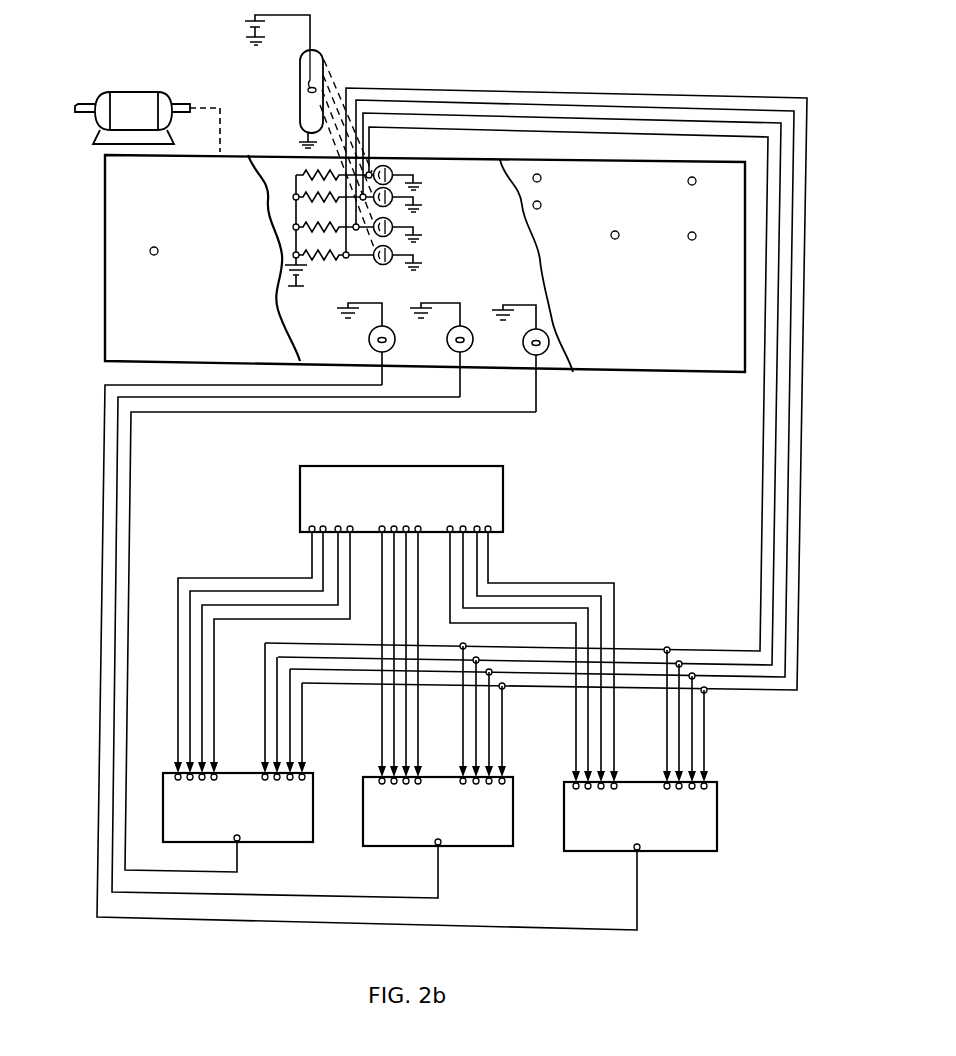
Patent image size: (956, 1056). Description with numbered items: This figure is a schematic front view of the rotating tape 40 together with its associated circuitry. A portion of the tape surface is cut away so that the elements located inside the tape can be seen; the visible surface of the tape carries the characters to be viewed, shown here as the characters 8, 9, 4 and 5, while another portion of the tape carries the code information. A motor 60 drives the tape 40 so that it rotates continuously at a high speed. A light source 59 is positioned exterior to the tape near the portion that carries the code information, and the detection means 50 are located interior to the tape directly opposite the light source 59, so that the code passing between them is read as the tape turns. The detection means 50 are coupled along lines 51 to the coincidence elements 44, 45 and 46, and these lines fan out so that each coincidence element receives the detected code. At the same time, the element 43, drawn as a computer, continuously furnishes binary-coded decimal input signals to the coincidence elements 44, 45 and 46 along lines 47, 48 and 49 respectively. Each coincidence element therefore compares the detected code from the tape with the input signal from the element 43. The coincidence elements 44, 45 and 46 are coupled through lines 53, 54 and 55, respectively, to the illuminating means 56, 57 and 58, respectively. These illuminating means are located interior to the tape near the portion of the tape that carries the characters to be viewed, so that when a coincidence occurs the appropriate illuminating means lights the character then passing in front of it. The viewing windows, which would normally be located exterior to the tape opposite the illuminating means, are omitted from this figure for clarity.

The tape 40 is at (286, 155).
The element 43 is at (430, 466).
The coincidence element 44 is at (702, 852).
The coincidence element 45 is at (504, 847).
The coincidence element 46 is at (310, 842).
The lines 47 is at (561, 578).
The lines 48 is at (373, 727).
The lines 49 is at (256, 572).
The detection means 50 is at (459, 225).
The lines 51 is at (757, 450).
The line 53 is at (105, 538).
The line 54 is at (118, 510).
The line 55 is at (131, 480).
The illuminating means 56 is at (393, 327).
The illuminating means 57 is at (470, 327).
The illuminating means 58 is at (537, 328).
The light source 59 is at (300, 90).
The motor 60 is at (140, 92).
The record zone 4 is at (614, 344).
The record zone 5 is at (693, 344).
The record zone 8 is at (157, 333).
The record zone 9 is at (225, 333).